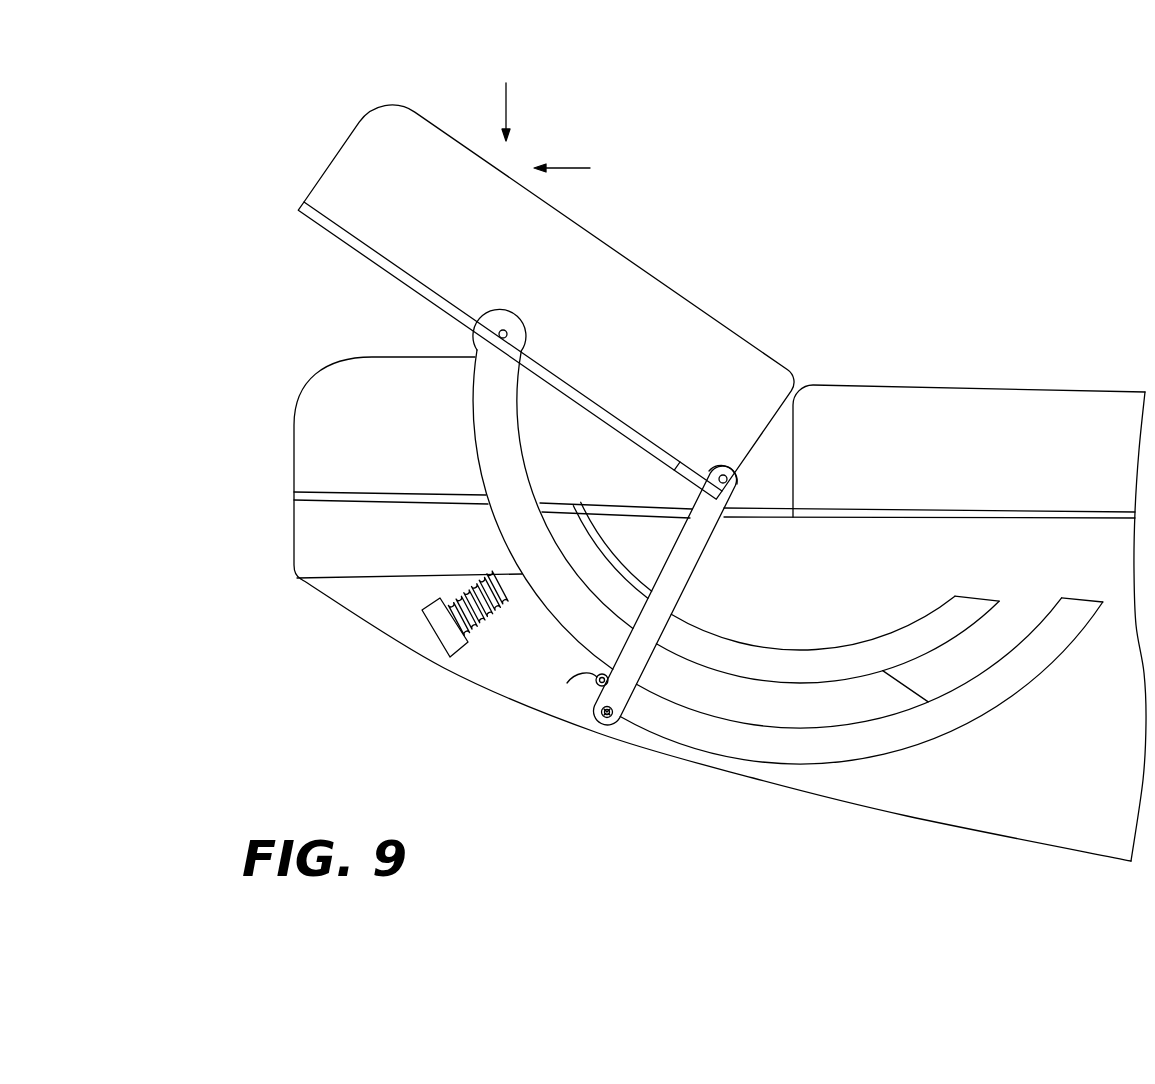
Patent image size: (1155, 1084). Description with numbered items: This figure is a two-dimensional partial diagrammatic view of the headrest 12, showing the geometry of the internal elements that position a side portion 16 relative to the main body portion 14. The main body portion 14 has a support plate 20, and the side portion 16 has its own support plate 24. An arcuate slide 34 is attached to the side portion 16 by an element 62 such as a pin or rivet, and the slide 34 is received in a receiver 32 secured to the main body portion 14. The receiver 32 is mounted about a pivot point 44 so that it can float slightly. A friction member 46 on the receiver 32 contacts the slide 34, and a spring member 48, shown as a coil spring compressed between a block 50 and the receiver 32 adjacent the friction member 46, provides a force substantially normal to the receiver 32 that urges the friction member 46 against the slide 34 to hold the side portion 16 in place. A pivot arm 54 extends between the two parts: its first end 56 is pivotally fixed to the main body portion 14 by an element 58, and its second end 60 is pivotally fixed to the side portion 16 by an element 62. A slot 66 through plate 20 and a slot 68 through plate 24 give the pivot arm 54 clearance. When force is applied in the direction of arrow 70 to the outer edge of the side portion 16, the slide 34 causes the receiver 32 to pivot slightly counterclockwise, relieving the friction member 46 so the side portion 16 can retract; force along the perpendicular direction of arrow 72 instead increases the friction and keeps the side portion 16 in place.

The headrest 12 is at (851, 811).
The main body portion 14 is at (918, 408).
The side portion 16 is at (712, 337).
The plate 20 is at (322, 488).
The plate 24 is at (343, 226).
The receiver 32 is at (732, 658).
The slide 34 is at (492, 440).
The pivot point 44 is at (567, 683).
The friction member 46 is at (470, 522).
The spring member 48 is at (453, 575).
The block 50 is at (420, 618).
The pivot arm 54 is at (672, 595).
The first end 56 is at (625, 704).
The element 58 is at (600, 722).
The second end 60 is at (736, 487).
The element 62 is at (508, 326).
The slot 66 is at (748, 520).
The slot 68 is at (687, 463).
The arrow 70 is at (507, 100).
The arrow 72 is at (573, 168).